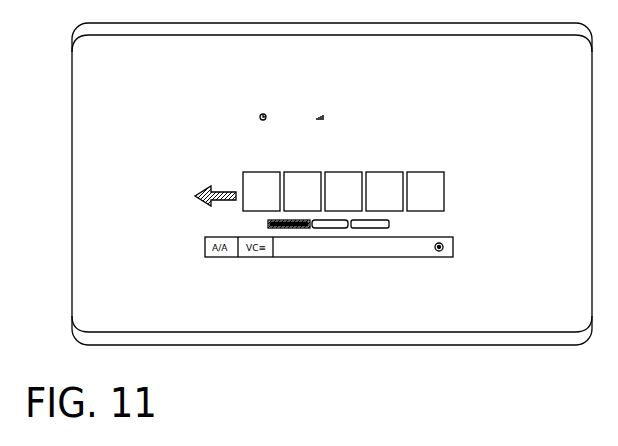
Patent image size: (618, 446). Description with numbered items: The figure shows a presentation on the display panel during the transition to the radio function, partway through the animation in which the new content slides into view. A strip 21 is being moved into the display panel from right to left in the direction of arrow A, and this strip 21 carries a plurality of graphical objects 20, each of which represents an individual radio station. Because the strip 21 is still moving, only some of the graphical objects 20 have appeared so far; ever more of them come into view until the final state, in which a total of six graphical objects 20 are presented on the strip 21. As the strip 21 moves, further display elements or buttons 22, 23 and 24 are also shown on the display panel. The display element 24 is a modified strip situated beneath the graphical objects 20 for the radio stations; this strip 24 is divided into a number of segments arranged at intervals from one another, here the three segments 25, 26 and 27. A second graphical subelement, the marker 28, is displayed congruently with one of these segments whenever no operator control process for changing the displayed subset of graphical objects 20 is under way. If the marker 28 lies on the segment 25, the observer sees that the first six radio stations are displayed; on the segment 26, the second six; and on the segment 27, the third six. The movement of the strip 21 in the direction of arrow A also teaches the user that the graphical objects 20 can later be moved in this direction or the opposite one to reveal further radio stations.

The arrow A is at (223, 195).
The graphical objects 20 is at (266, 182).
The strip 21 is at (470, 170).
The display element or button 22 is at (313, 133).
The display element or button 23 is at (404, 110).
The modified strip 24 is at (295, 264).
The segment 25 is at (292, 230).
The segment 26 is at (336, 231).
The segment 27 is at (383, 231).
The marker 28 is at (283, 229).